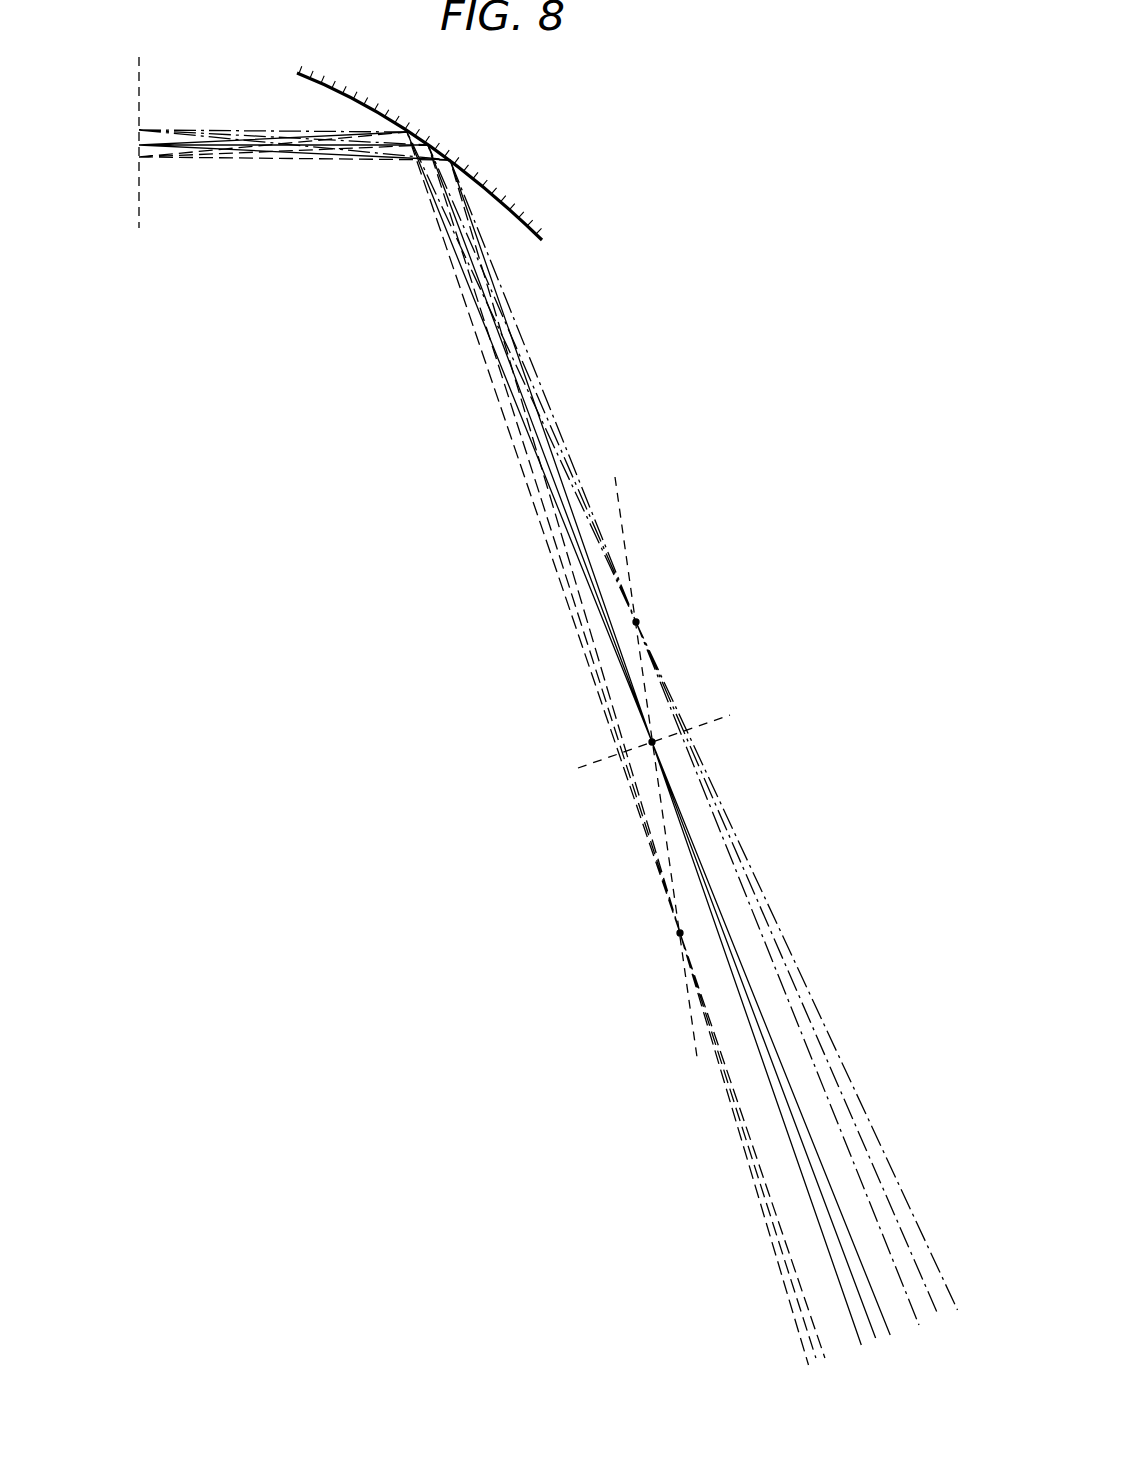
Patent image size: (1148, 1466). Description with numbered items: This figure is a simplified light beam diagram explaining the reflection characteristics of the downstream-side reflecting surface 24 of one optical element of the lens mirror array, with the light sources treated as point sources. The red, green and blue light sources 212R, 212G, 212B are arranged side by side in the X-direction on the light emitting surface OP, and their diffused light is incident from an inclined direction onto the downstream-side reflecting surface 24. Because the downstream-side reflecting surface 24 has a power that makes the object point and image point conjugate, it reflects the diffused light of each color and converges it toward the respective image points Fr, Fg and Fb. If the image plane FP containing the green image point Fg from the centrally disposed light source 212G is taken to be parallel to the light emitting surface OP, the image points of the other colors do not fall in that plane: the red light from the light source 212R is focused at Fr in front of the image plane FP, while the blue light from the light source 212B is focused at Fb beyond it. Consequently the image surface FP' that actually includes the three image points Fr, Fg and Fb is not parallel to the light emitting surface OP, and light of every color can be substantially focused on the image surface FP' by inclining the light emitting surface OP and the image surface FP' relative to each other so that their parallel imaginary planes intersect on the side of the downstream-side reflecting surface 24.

The downstream-side reflecting surface 24 is at (330, 90).
The red light source 212R is at (139, 130).
The green light source 212G is at (139, 145).
The blue light source 212B is at (139, 157).
The light emitting surface OP is at (140, 197).
The image plane FP is at (636, 735).
The image surface FP' is at (656, 755).
The red light image point Fr is at (638, 622).
The green light image point Fg is at (654, 741).
The blue light image point Fb is at (678, 934).